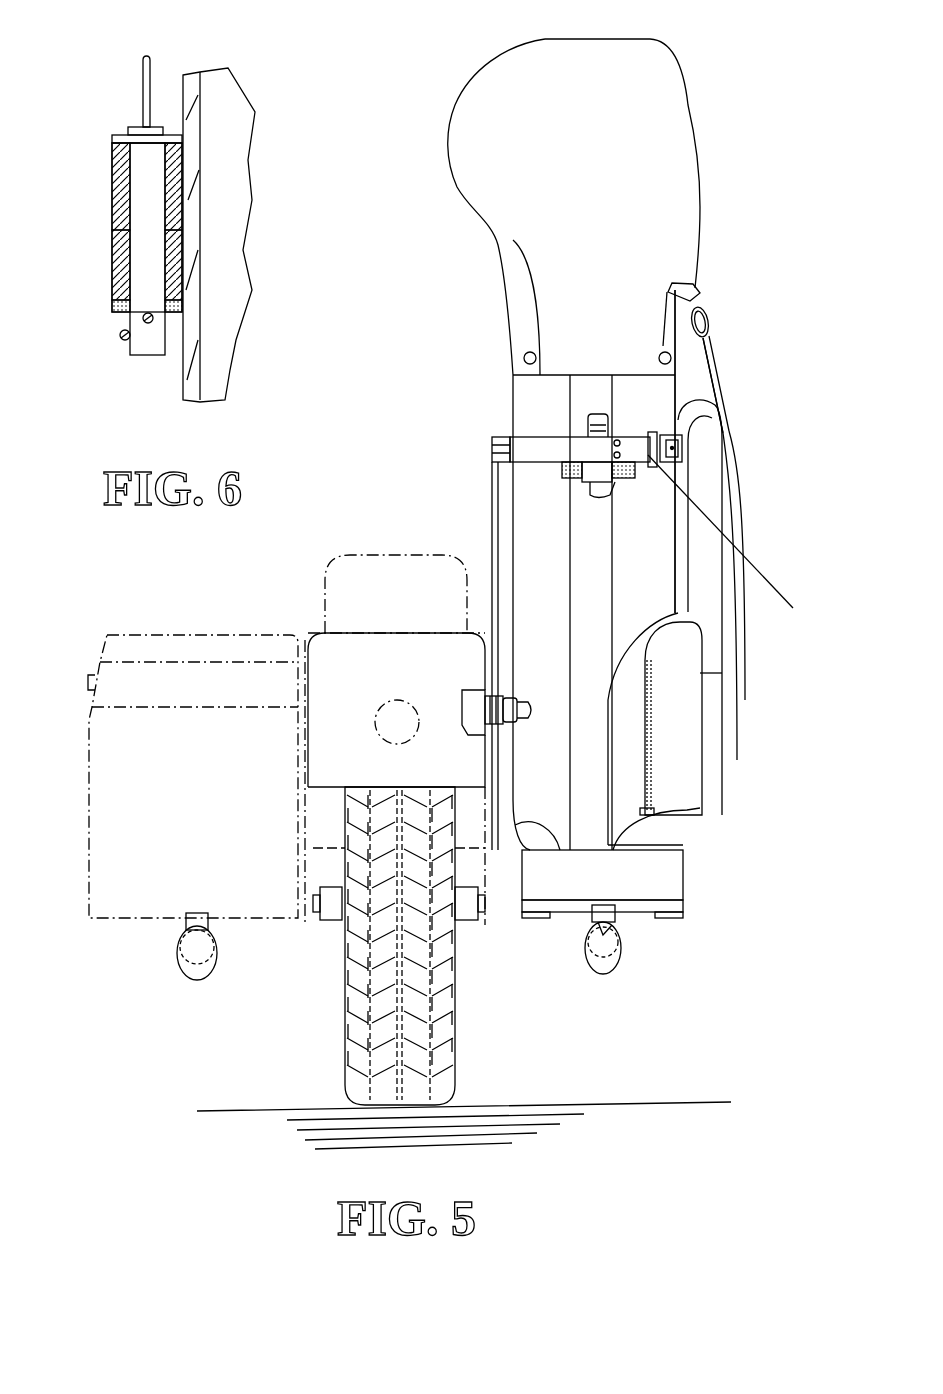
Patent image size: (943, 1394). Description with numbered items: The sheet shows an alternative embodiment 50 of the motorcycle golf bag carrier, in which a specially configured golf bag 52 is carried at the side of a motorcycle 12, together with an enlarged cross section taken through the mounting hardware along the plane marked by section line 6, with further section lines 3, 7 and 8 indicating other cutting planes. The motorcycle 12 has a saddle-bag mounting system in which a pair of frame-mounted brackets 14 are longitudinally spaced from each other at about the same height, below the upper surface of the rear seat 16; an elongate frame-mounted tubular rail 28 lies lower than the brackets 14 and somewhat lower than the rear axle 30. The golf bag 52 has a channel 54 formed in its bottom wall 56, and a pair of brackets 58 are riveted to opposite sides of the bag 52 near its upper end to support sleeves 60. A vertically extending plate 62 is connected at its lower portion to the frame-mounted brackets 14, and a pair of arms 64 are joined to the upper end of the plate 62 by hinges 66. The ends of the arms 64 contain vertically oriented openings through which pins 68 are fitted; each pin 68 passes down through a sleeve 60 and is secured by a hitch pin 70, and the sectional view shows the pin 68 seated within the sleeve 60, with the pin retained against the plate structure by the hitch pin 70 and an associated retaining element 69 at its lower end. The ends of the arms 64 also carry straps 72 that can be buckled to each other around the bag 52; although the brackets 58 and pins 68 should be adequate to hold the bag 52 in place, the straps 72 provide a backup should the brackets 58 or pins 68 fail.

In FIG. 5, the motorcycle 12 is at (262, 607).
In FIG. 5, the frame-mounted brackets 14 is at (487, 692).
In FIG. 5, the rear seat 16 is at (360, 603).
In FIG. 5, the tubular rail 28 is at (622, 935).
In FIG. 5, the rear axle 30 is at (458, 915).
In FIG. 5, the alternative embodiment 50 is at (452, 350).
In FIG. 6, the golf bag 52 is at (192, 75).
In FIG. 5, the golf bag 52 is at (680, 400).
In FIG. 5, the channel 54 is at (585, 945).
In FIG. 5, the bottom wall 56 is at (672, 905).
In FIG. 5, the brackets 58 is at (595, 440).
In FIG. 6, the sleeves 60 is at (120, 255).
In FIG. 5, the sleeves 60 is at (657, 407).
In FIG. 5, the plate 62 is at (495, 434).
In FIG. 6, the arms 64 is at (120, 160).
In FIG. 5, the arms 64 is at (537, 447).
In FIG. 5, the hinges 66 is at (505, 437).
In FIG. 6, the pins 68 is at (146, 180).
In FIG. 5, the pins 68 is at (598, 463).
In FIG. 6, the retaining washer 69 is at (120, 312).
In FIG. 5, the retaining washer 69 is at (598, 480).
In FIG. 6, the hitch pins 70 is at (122, 345).
In FIG. 5, the straps 72 is at (704, 398).
In FIG. 5, the section line 3- 3 is at (508, 658).
In FIG. 5, the section line 6- 6 is at (532, 387).
In FIG. 5, the section line 7- 7 is at (440, 528).
In FIG. 5, the section line 8- 8 is at (349, 508).